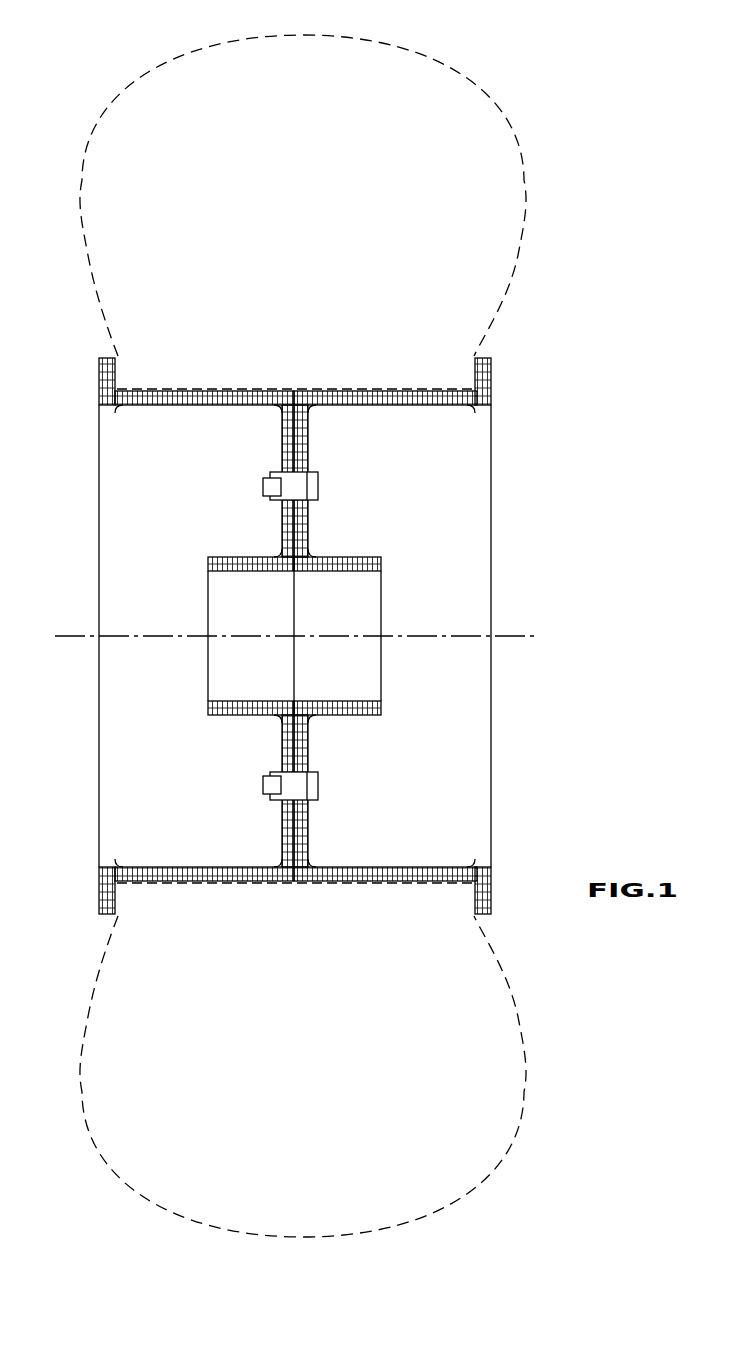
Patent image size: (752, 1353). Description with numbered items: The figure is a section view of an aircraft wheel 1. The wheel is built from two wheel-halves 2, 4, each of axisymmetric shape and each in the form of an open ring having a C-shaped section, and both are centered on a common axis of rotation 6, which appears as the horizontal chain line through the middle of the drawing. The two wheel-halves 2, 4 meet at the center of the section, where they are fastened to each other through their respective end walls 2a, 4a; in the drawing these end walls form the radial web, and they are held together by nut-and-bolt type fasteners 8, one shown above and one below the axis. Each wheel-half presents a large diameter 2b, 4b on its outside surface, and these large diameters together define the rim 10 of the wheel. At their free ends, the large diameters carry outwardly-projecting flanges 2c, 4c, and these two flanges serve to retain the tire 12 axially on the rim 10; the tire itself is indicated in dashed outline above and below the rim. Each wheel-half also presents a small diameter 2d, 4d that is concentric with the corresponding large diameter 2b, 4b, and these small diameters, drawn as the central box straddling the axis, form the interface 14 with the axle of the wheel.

The aircraft wheel 1 is at (516, 497).
The wheel-half 2 is at (350, 537).
The end wall 2a is at (307, 512).
The large diameter 2b is at (393, 405).
The flange 2c is at (493, 370).
The small diameter 2d is at (344, 572).
The wheel-half 4 is at (240, 537).
The end wall 4a is at (283, 512).
The large diameter 4b is at (200, 405).
The flange 4c is at (100, 363).
The small diameter 4d is at (248, 572).
The axis of rotation 6 is at (510, 637).
The nut-and-bolt type fasteners 8 is at (320, 487).
The rim 10 is at (358, 385).
The tire 12 is at (465, 123).
The interface 14 is at (348, 698).